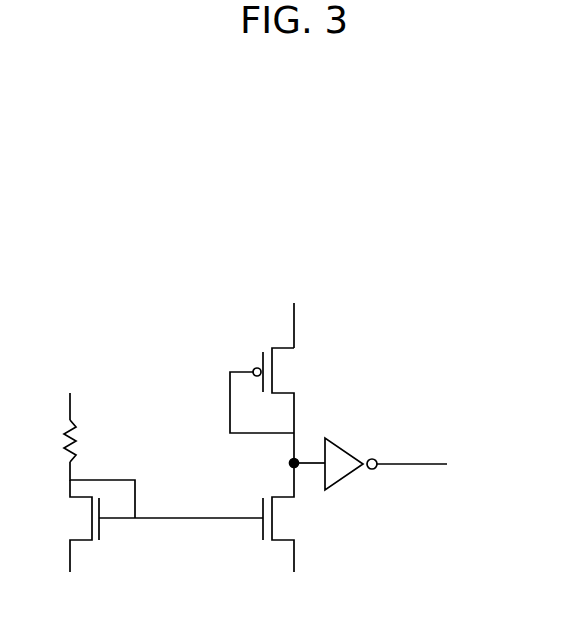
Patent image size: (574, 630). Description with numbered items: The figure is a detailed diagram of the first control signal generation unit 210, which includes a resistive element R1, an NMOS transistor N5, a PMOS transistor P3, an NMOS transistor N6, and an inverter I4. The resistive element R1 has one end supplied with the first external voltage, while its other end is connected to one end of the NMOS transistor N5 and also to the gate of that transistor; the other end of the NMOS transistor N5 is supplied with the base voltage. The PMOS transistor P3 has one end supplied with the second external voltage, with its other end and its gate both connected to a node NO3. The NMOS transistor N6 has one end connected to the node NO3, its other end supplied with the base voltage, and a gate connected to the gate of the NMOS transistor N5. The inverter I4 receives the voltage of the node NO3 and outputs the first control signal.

The first control signal generation unit 210 is at (480, 237).
The PMOS transistor P3 is at (293, 373).
The NMOS transistor N5 is at (68, 518).
The NMOS transistor N6 is at (292, 521).
The resistive element R1 is at (80, 443).
The inverter I4 is at (347, 447).
The node NO3 is at (275, 463).